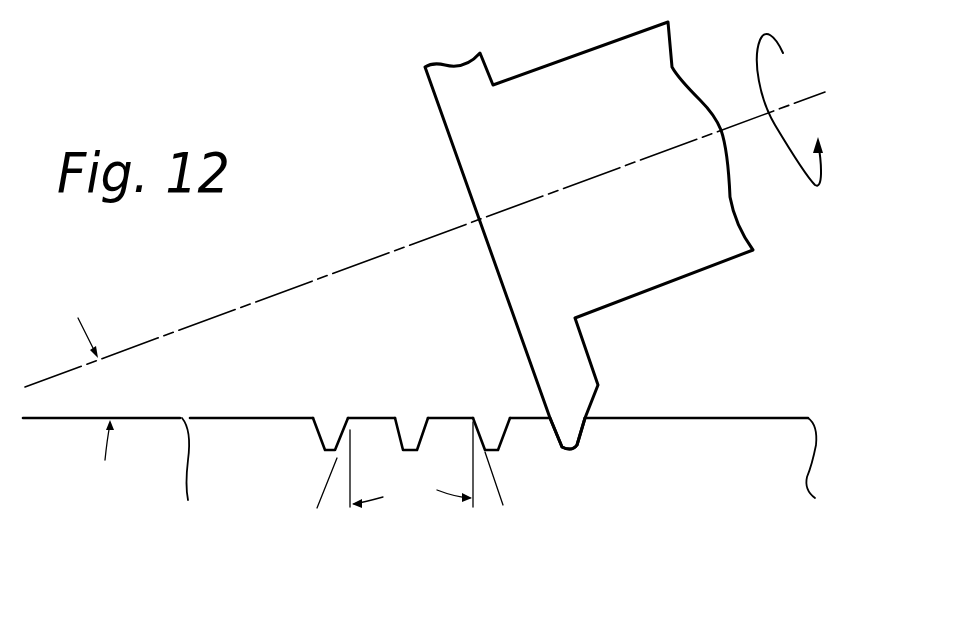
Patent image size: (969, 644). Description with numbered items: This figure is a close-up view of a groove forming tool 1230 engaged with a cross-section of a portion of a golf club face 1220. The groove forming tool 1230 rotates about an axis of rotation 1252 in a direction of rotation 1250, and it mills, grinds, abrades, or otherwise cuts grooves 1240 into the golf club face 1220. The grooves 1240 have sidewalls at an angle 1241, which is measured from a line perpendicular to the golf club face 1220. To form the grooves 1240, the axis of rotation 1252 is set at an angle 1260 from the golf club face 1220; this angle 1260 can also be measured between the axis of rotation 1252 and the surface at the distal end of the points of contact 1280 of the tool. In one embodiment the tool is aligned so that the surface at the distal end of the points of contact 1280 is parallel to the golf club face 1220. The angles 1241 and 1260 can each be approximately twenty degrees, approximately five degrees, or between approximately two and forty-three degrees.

The golf club face 1220 is at (690, 418).
The groove forming tool 1230 is at (478, 155).
The grooves 1240 is at (405, 405).
The angle 1241 is at (320, 497).
The direction of rotation 1250 is at (810, 183).
The axis of rotation 1252 is at (382, 256).
The angle 1260 is at (101, 389).
The points of contact 1280 is at (572, 430).